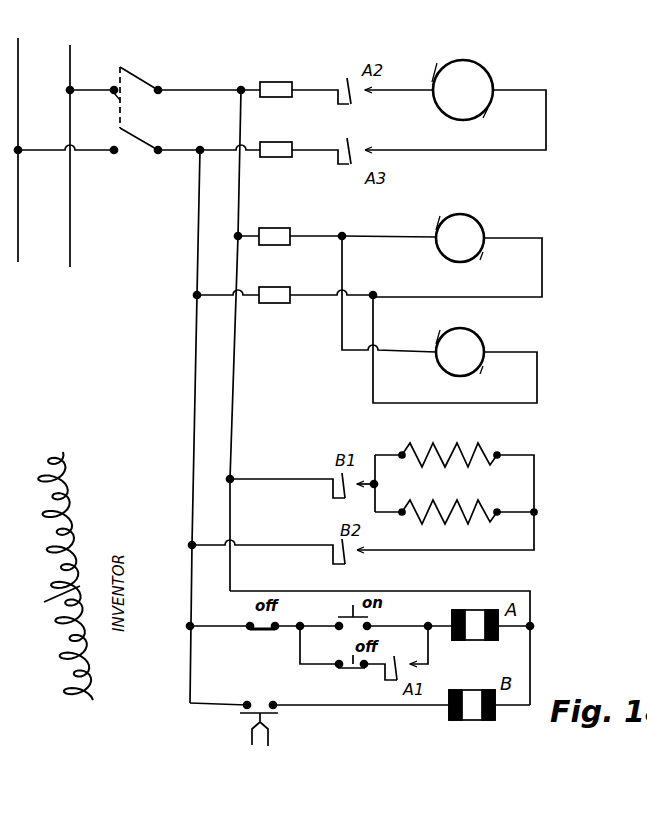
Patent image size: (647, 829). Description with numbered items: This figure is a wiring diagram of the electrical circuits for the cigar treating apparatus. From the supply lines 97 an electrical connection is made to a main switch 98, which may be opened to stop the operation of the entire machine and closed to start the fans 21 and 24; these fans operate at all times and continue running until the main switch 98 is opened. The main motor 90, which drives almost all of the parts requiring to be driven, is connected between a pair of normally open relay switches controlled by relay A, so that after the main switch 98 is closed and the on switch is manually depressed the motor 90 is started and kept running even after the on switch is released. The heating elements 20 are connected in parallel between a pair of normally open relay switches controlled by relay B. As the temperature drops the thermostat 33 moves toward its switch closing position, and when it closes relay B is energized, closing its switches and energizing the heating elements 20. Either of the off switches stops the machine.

The lines 97 is at (70, 222).
The main switch 98 is at (136, 71).
The main motor 90 is at (478, 77).
The fan 21 is at (470, 230).
The fan 24 is at (470, 345).
The heating elements 20 is at (485, 456).
The thermostat 33 is at (268, 737).